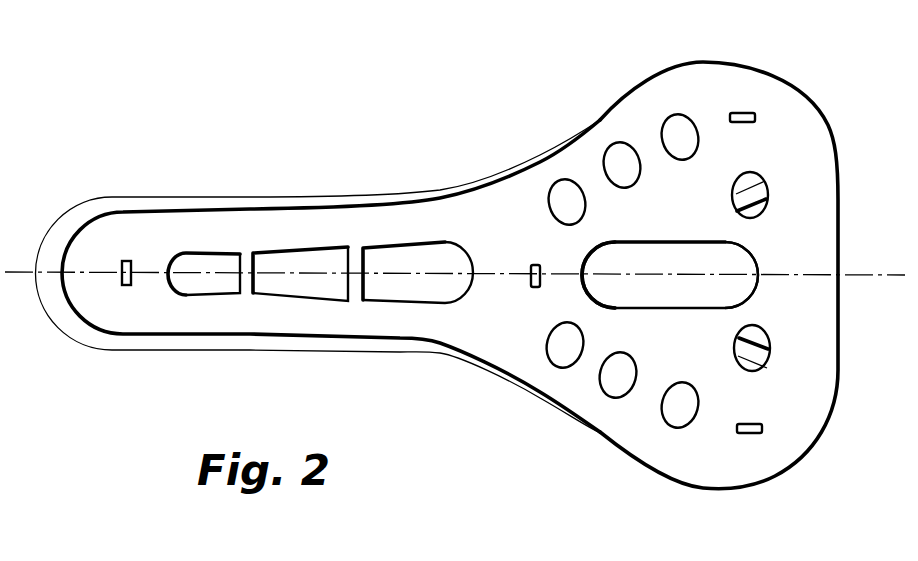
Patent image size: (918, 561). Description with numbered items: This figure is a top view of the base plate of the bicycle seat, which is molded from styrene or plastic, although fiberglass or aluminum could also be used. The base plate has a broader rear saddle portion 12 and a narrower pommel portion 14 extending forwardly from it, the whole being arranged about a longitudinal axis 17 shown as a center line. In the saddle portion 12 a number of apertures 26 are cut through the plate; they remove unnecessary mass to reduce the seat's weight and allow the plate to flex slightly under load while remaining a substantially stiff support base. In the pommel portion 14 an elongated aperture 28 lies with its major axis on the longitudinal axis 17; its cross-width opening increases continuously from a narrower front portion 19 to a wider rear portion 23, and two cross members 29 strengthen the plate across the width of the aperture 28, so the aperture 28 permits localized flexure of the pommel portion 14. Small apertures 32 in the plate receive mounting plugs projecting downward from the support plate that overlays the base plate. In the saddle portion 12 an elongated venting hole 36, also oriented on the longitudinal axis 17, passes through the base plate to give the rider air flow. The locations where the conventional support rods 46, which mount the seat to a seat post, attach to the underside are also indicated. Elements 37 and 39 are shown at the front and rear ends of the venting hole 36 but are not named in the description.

The saddle portion 12 is at (698, 490).
The pommel portion 14 is at (188, 350).
The longitudinal axis 17 is at (34, 272).
The front portion 19 is at (171, 254).
The rear portion 23 is at (466, 249).
The apertures 26 is at (662, 119).
The aperture 28 is at (322, 242).
The cross members 29 is at (247, 262).
The apertures 32 is at (129, 260).
The venting hole 36 is at (723, 274).
The front end of opening 37 is at (588, 251).
The rear end of opening 39 is at (757, 284).
The support rods 46 is at (748, 192).